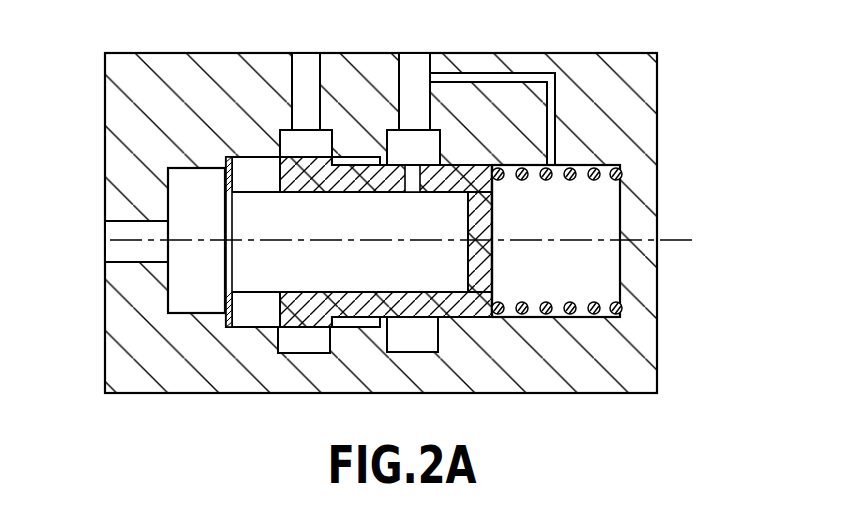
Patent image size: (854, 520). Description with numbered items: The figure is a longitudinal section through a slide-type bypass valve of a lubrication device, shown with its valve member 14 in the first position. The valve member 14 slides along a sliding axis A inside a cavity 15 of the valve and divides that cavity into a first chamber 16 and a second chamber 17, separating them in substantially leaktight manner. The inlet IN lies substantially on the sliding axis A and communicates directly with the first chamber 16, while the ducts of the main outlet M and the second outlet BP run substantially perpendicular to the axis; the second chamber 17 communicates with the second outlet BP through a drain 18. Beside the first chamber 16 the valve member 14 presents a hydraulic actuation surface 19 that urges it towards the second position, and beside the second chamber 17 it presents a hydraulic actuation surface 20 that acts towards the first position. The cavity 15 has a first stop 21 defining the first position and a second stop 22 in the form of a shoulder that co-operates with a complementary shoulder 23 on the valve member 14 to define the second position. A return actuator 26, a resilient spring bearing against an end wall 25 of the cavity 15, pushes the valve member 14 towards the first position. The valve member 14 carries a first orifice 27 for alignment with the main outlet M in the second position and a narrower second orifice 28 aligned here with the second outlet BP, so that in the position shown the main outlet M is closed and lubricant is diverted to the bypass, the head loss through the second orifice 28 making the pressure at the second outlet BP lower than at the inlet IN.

The valve member 14 is at (310, 292).
The cavity 15 is at (177, 167).
The first chamber 16 is at (322, 277).
The second chamber 17 is at (587, 236).
The drain 18 is at (532, 74).
The hydraulic actuation surface 19 is at (466, 271).
The hydraulic actuation surface 20 is at (498, 196).
The first stop 21 is at (234, 180).
The second stop 22 is at (363, 157).
The complementary shoulder 23 is at (343, 328).
The end wall 25 is at (610, 191).
The return actuator 26 is at (597, 318).
The first orifice 27 is at (258, 163).
The second orifice 28 is at (412, 191).
The main outlet M is at (304, 58).
The second outlet BP is at (410, 58).
The inlet IN is at (117, 232).
The sliding axis A is at (415, 222).